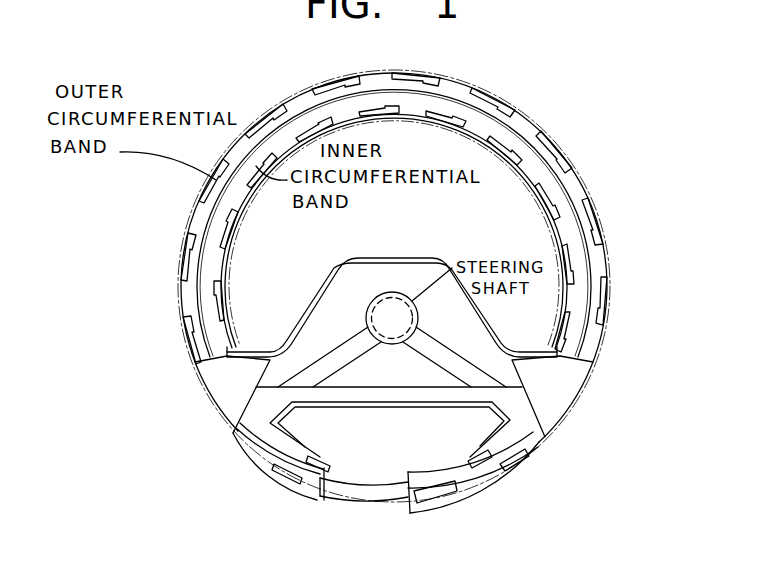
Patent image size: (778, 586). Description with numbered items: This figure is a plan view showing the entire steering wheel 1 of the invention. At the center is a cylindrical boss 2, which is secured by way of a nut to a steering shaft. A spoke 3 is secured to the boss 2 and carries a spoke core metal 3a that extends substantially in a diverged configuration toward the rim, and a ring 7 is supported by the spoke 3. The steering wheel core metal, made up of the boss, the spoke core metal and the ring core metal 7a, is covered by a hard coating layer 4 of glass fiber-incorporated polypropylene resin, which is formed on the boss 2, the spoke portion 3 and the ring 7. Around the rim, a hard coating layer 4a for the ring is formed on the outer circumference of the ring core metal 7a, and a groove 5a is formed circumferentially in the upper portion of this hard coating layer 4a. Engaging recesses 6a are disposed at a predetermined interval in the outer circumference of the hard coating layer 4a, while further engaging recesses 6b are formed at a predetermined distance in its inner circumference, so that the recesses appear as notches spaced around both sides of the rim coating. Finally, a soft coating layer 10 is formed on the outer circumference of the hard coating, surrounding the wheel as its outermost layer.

The steering wheel 1 is at (600, 211).
The boss 2 is at (392, 292).
The spoke 3 is at (295, 352).
The spoke core metal 3a is at (348, 353).
The hard coating layer 4 is at (283, 410).
The hard coating layer for the ring 4a is at (596, 323).
The groove 5a is at (543, 168).
The engaging recesses 6a is at (598, 284).
The engaging recesses 6b is at (553, 223).
The ring 7 is at (500, 113).
The ring core metal 7a is at (370, 496).
The soft coating layer 10 is at (542, 139).